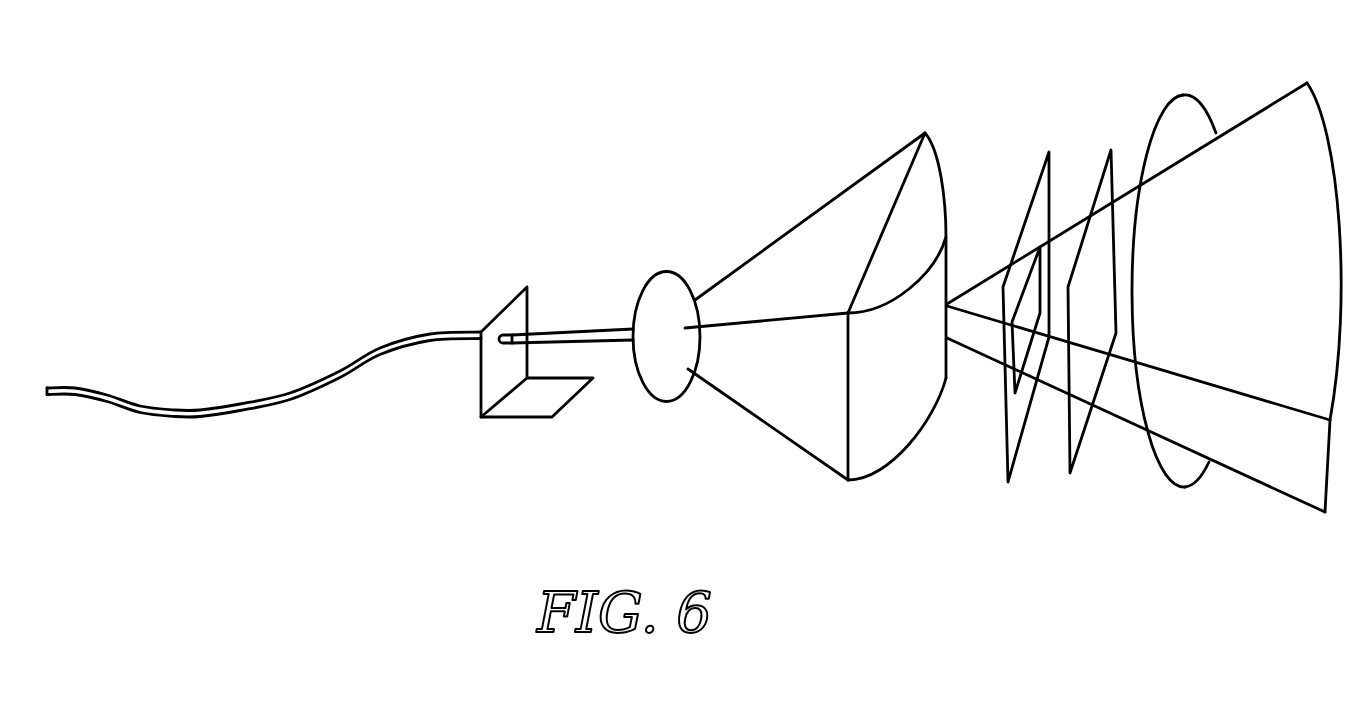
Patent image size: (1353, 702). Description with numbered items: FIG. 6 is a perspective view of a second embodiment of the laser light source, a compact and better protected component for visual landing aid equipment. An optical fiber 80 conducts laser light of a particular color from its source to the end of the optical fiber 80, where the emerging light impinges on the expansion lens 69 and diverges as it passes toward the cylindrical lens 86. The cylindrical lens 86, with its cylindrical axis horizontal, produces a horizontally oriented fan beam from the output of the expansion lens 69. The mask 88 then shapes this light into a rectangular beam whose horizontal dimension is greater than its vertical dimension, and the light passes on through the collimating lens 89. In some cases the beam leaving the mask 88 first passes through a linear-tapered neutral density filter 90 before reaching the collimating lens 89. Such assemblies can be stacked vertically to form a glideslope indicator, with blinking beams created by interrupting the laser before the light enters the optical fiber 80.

The optical fiber 80 is at (380, 348).
The expansion lens 69 is at (650, 277).
The cylindrical lens 86 is at (935, 150).
The mask 88 is at (1040, 267).
The linear-tapered neutral density filter 90 is at (1110, 148).
The collimating lens 89 is at (1200, 95).